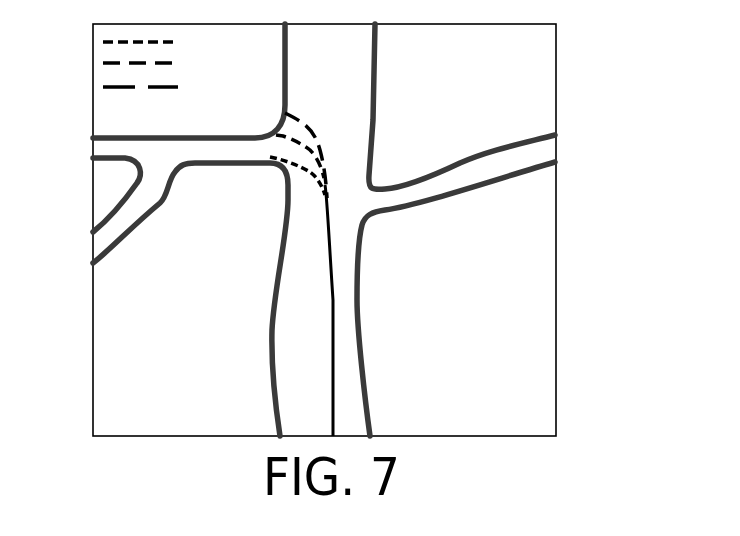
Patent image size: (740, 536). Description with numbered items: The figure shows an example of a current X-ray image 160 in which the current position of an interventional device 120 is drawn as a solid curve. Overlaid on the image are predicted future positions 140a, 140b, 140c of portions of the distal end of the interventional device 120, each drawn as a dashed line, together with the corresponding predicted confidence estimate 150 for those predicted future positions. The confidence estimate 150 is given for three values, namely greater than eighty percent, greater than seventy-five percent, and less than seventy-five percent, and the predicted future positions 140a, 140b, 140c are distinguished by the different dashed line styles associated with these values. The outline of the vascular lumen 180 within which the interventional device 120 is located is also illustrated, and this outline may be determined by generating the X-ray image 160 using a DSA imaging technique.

The interventional device 120 is at (338, 275).
The predicted future position 140a is at (289, 117).
The predicted future position 140b is at (292, 141).
The predicted future position 140c is at (302, 162).
The predicted confidence estimate 150 is at (73, 102).
The current X-ray image 160 is at (557, 410).
The vascular lumen 180 is at (362, 355).